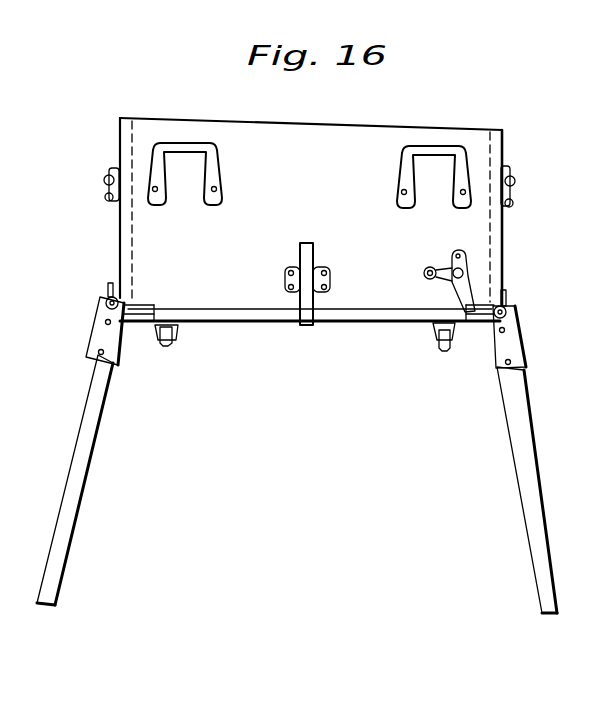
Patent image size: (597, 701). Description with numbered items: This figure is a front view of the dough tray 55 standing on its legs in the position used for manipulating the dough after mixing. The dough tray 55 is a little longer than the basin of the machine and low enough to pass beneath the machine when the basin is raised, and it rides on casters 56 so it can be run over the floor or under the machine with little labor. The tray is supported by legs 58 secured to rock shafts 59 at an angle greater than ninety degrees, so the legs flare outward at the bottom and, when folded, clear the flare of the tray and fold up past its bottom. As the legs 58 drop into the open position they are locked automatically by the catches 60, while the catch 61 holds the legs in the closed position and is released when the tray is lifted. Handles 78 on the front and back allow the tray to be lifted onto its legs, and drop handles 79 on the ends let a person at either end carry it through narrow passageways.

The dough tray 55 is at (311, 219).
The casters 56 is at (166, 347).
The legs 58 is at (82, 455).
The rock shafts 59 is at (110, 298).
The catches 60 is at (462, 300).
The catch 61 is at (310, 297).
The handles 78 is at (222, 150).
The drop handles 79 is at (108, 195).